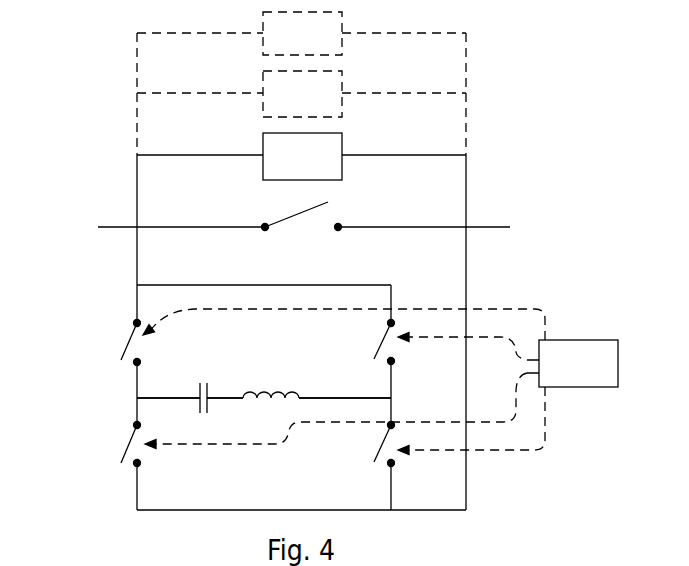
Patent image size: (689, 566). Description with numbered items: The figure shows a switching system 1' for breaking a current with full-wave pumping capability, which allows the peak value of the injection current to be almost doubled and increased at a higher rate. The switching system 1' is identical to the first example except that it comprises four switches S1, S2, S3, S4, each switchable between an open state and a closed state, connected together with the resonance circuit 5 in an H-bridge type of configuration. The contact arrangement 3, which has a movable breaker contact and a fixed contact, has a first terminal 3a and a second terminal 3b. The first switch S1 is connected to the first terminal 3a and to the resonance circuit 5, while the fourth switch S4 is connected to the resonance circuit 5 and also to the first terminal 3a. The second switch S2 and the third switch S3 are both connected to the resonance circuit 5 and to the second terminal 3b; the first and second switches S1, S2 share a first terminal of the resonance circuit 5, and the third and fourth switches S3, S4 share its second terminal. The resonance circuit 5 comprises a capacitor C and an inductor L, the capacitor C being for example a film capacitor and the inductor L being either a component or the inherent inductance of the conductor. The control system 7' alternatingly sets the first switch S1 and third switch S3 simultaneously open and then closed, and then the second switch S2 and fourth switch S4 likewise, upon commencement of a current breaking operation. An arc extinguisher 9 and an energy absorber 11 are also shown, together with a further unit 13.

The switching system 1' is at (352, 271).
The load / output unit 13 is at (302, 33).
The energy absorber 11 is at (302, 94).
The arc extinguisher 9 is at (302, 156).
The contact arrangement 3 is at (275, 207).
The first terminal 3a is at (262, 225).
The second terminal 3b is at (340, 226).
The first switch S1 is at (112, 345).
The second switch S2 is at (112, 450).
The third switch S3 is at (362, 458).
The fourth switch S4 is at (371, 340).
The resonance circuit 5 is at (233, 382).
The capacitor C is at (196, 400).
The inductor L is at (285, 388).
The control system 7' is at (380, 382).